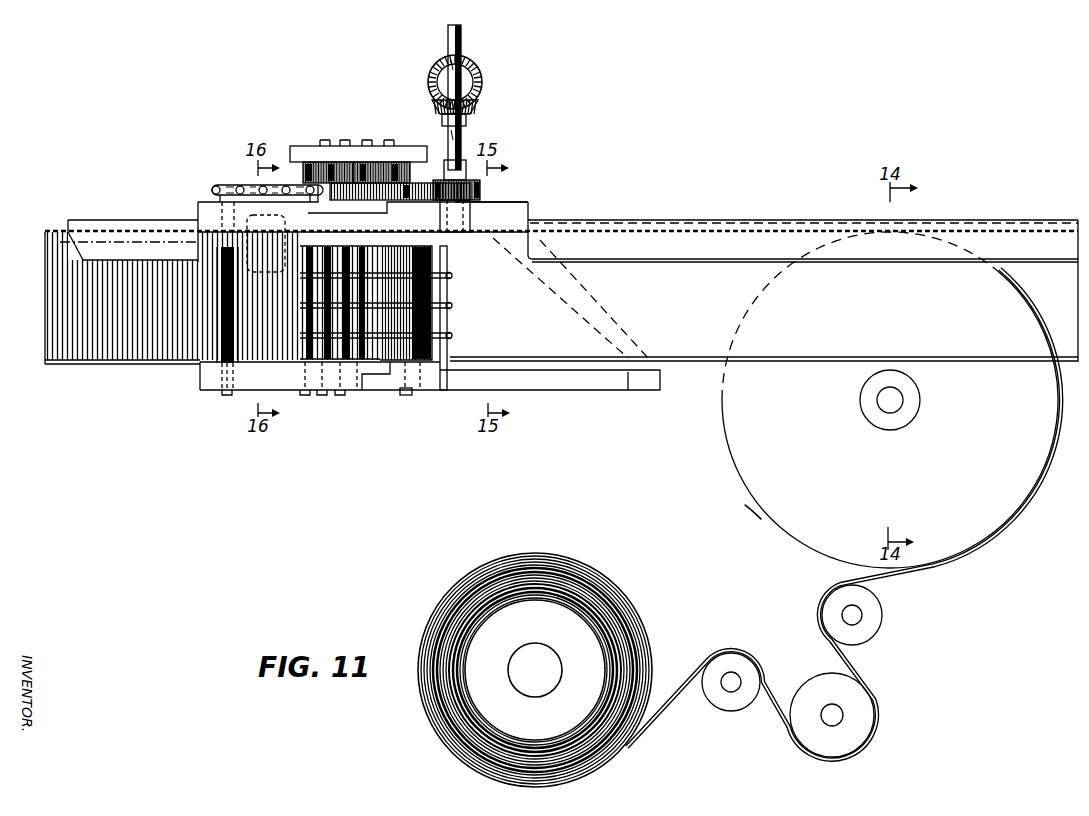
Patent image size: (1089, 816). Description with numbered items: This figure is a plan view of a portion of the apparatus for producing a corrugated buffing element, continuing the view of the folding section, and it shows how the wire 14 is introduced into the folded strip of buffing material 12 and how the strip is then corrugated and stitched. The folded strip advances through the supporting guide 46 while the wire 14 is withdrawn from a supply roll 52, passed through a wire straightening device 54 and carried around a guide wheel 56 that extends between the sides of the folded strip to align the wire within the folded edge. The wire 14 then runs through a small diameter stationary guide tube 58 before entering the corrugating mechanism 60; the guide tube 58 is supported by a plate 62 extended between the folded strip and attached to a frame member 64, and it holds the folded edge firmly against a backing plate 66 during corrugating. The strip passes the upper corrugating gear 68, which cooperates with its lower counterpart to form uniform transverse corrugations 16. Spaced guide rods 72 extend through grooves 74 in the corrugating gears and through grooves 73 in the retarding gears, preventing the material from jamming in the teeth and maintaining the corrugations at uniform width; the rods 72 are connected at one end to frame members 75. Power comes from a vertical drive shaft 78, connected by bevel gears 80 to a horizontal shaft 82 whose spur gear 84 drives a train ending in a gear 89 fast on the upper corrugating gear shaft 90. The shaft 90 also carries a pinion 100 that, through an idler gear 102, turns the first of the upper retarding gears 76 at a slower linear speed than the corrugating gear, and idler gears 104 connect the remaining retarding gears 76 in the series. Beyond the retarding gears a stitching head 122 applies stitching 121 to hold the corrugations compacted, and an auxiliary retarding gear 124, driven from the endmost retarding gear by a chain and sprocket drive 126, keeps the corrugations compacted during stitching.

The buffing material 12 is at (966, 352).
The wire 14 is at (45, 228).
The corrugations 16 is at (95, 355).
The supporting guide 46 is at (797, 365).
The supply roll 52 is at (534, 555).
The wire straightening device 54 is at (892, 708).
The guide wheel 56 is at (755, 490).
The guide tube 58 is at (514, 218).
The corrugating mechanism 60 is at (398, 128).
The plate 62 is at (598, 310).
The frame member 64 is at (584, 380).
The backing plate 66 is at (437, 205).
The upper corrugating gear 68 is at (432, 318).
The guide rods 72 is at (434, 278).
The grooves 73 is at (303, 330).
The grooves 74 is at (424, 362).
The frame members 75 is at (446, 262).
The upper retarding gears 76 is at (343, 358).
The vertical drive shaft 78 is at (446, 72).
The bevel gears 80 is at (482, 108).
The horizontal shaft 82 is at (462, 136).
The spur gear 84 is at (482, 197).
The gear 89 is at (425, 178).
The upper corrugating gear shaft 90 is at (405, 394).
The pinion 100 is at (411, 169).
The idler gear 102 is at (386, 142).
The idler gears 104 is at (335, 158).
The stitching 121 is at (131, 240).
The stitching head 122 is at (258, 212).
The auxiliary retarding gear 124 is at (218, 337).
The chain and sprocket drive 126 is at (288, 184).